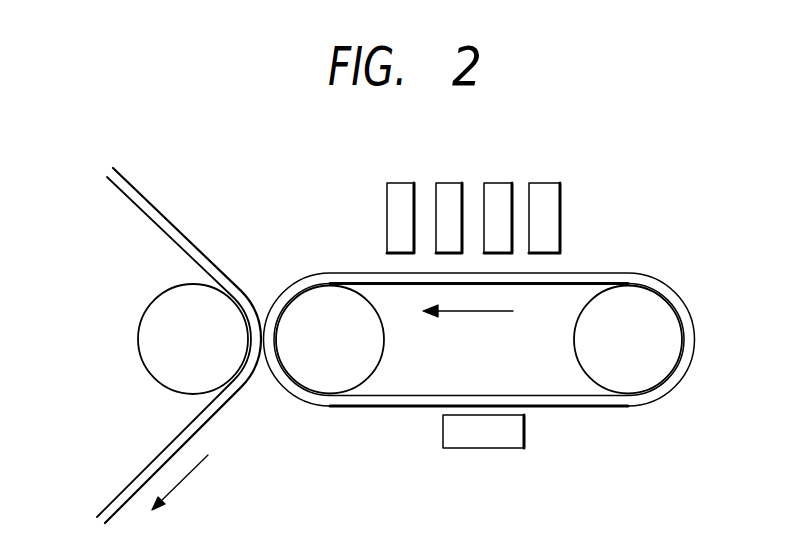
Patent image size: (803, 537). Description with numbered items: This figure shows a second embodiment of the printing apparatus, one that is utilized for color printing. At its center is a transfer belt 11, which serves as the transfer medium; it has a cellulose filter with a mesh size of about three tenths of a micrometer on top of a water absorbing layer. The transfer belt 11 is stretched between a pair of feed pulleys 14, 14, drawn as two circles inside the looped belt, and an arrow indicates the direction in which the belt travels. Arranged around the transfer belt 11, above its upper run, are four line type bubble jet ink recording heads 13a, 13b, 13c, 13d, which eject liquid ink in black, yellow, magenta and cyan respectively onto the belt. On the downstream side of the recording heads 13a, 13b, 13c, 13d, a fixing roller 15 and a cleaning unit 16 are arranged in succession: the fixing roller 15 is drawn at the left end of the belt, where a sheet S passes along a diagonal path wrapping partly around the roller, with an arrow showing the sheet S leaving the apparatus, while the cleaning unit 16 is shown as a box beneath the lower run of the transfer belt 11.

The sheet S is at (187, 248).
The transfer belt 11 is at (596, 280).
The line type bubble jet ink recording head 13a is at (546, 190).
The line type bubble jet ink recording head 13b is at (498, 190).
The line type bubble jet ink recording head 13c is at (448, 190).
The line type bubble jet ink recording head 13d is at (402, 190).
The feed pulley 14 is at (322, 380).
The fixing roller 15 is at (146, 347).
The cleaning unit 16 is at (480, 443).